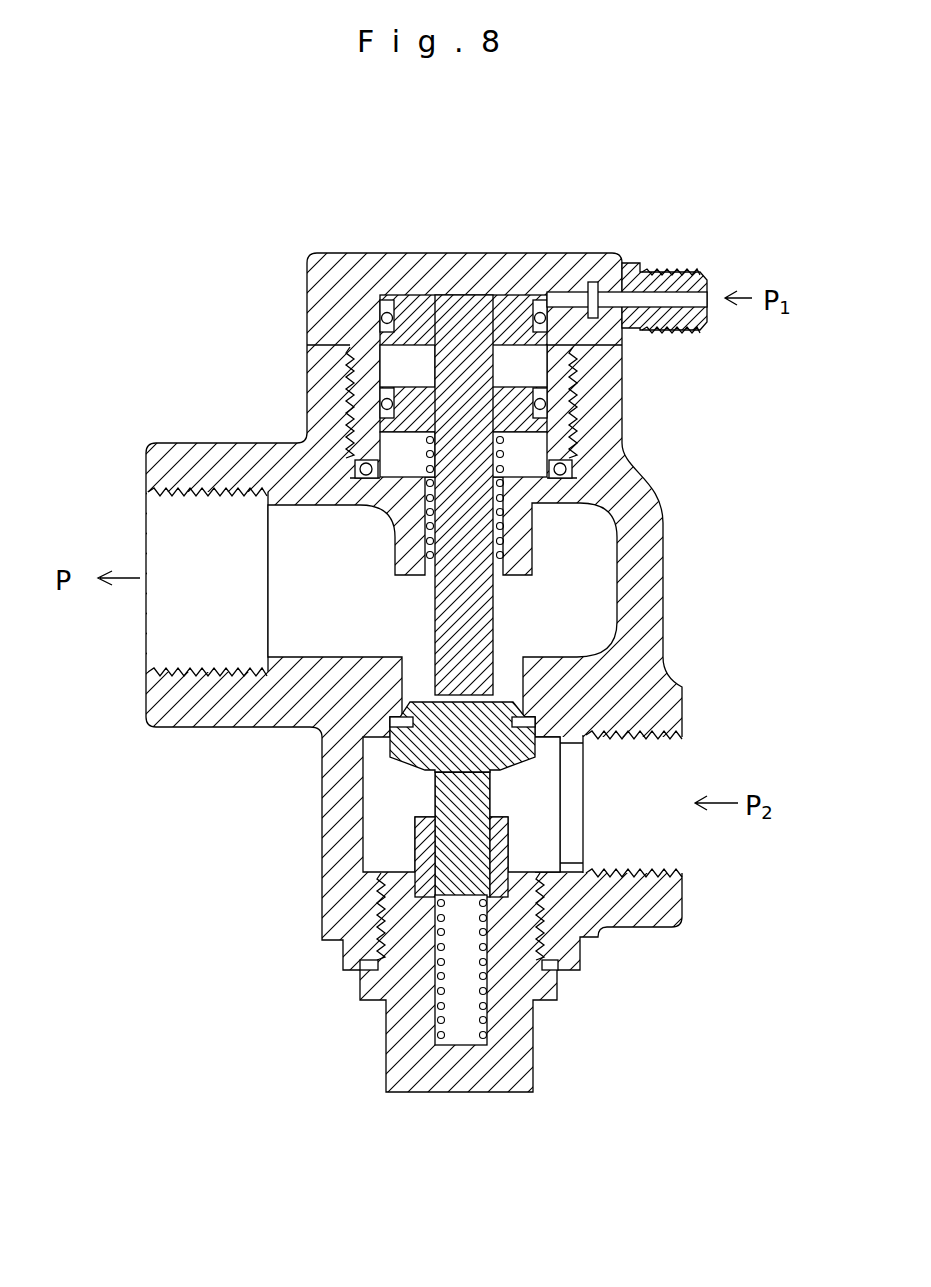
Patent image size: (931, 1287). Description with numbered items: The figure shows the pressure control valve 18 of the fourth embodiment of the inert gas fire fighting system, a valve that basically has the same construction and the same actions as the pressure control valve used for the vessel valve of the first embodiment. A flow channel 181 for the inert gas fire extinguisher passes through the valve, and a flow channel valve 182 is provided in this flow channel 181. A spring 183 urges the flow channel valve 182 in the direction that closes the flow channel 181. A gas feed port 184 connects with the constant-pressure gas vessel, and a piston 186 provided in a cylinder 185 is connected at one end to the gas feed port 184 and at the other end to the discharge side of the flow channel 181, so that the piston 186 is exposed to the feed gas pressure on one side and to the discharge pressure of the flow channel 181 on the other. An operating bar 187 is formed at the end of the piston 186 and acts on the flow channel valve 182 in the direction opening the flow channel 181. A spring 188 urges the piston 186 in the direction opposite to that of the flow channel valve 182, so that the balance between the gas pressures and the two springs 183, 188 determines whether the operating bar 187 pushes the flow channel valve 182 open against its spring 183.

The pressure control valve 18 is at (723, 213).
The flow channel 181 is at (381, 810).
The flow channel valve 182 is at (403, 745).
The spring 183 is at (436, 1000).
The gas feed port 184 is at (645, 292).
The cylinder 185 is at (392, 447).
The piston 186 is at (413, 310).
The operating bar 187 is at (483, 622).
The spring 188 is at (505, 515).